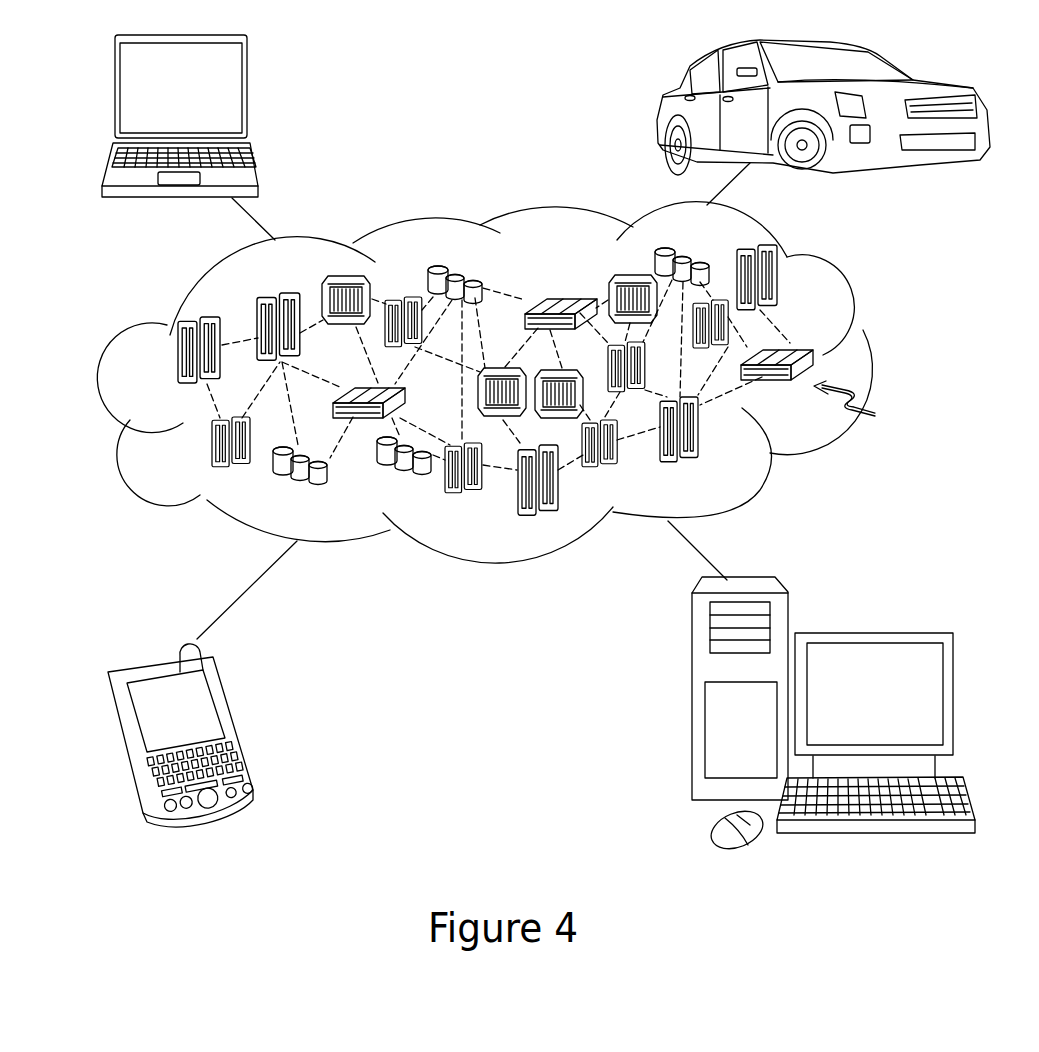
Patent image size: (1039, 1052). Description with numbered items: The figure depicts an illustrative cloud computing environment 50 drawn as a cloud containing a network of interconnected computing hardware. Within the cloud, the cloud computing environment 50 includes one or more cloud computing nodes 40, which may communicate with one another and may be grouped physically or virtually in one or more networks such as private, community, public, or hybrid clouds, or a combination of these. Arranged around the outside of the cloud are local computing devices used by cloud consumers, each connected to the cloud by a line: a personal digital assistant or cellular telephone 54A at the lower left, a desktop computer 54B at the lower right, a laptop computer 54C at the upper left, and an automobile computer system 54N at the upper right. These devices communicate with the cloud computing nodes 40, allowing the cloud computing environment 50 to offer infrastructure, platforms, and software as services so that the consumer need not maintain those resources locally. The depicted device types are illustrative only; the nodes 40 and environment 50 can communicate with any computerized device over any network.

The cloud computing environment 50 is at (872, 358).
The cloud computing nodes 40 is at (863, 407).
The personal digital assistant (PDA) or cellular telephone 54A is at (235, 722).
The desktop computer 54B is at (870, 633).
The laptop computer 54C is at (246, 97).
The automobile computer system 54N is at (660, 111).